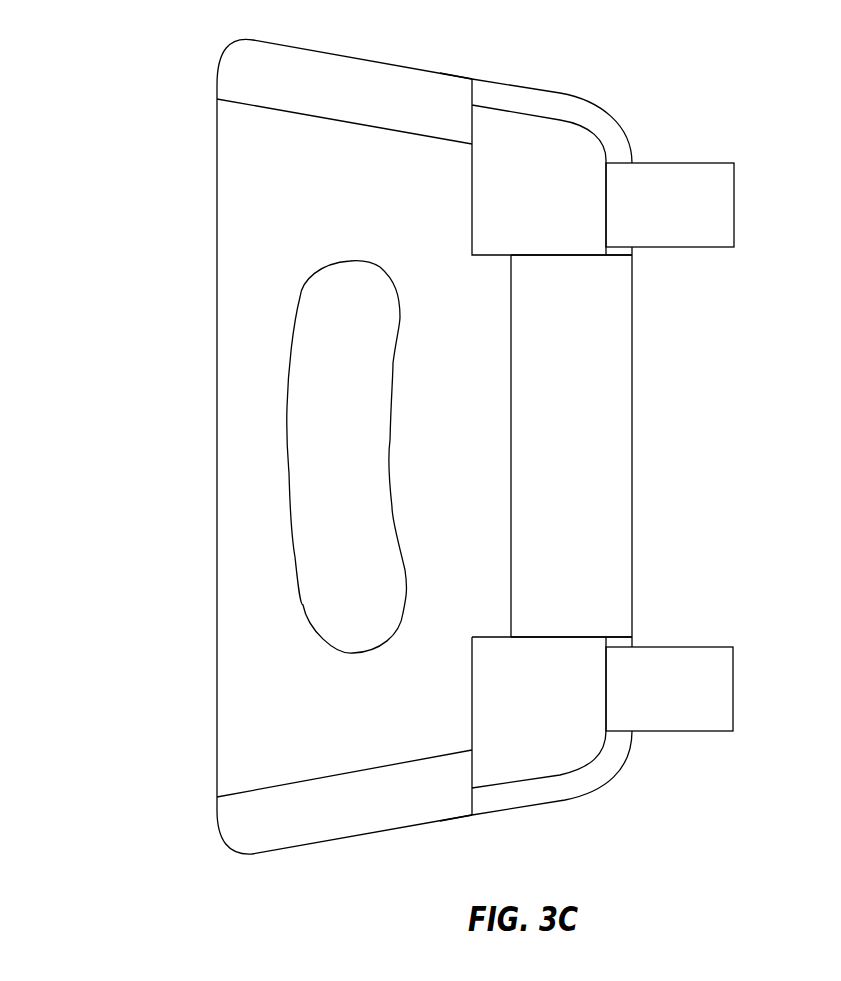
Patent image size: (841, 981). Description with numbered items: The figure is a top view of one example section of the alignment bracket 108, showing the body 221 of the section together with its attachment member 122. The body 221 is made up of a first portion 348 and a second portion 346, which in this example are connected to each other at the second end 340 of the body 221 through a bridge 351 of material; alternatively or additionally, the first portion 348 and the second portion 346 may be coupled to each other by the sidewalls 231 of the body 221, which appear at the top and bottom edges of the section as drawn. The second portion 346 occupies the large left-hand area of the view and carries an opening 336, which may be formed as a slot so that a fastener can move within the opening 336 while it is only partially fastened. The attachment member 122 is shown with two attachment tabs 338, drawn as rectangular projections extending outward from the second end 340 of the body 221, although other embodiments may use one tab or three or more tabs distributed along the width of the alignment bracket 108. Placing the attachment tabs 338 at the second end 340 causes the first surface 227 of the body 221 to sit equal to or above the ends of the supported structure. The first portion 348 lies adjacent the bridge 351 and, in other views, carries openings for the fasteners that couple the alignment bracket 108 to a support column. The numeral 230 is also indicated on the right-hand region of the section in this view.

The alignment bracket 108 is at (722, 62).
The attachment member 122 is at (733, 136).
The body 221 is at (238, 712).
The first surface 227 is at (237, 292).
The housing portion 230 is at (633, 410).
The sidewalls 231 is at (450, 75).
The opening 336 is at (313, 423).
The attachment tabs 338 is at (725, 207).
The second end 340 is at (623, 494).
The second portion 346 is at (253, 202).
The first portion 348 is at (633, 347).
The bridge 351 is at (587, 580).